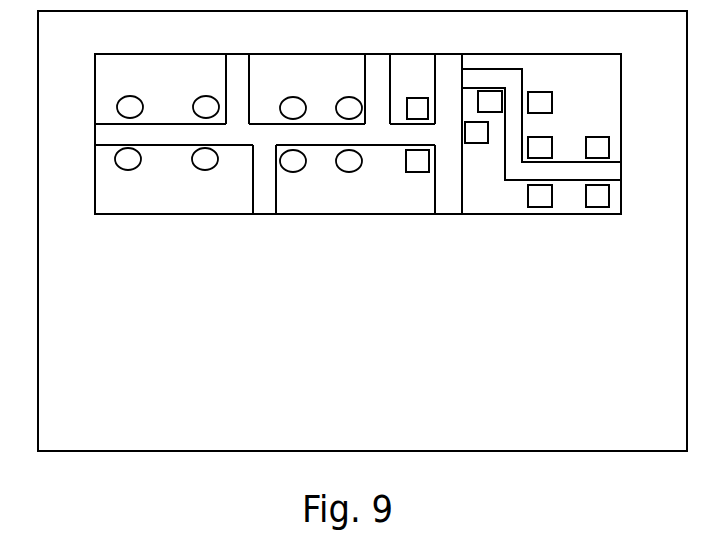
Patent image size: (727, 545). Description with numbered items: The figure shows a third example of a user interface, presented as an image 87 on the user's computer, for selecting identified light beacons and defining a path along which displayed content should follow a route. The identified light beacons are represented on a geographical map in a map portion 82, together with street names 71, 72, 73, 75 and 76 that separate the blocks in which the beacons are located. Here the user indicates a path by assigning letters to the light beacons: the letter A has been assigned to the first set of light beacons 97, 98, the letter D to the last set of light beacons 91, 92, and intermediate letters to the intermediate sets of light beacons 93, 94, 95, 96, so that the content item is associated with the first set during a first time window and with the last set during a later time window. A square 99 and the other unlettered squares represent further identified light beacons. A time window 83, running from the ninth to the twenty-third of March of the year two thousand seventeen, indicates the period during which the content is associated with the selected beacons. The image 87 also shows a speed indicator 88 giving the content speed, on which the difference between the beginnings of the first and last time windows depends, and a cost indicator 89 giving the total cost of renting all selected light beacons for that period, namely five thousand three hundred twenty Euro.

The street name 71 is at (265, 134).
The street name 72 is at (237, 89).
The street name 73 is at (264, 179).
The street name 75 is at (413, 134).
The street name 76 is at (541, 126).
The map portion 82 is at (547, 161).
The time window 83 is at (327, 242).
The image 87 is at (633, 451).
The speed indicator 88 is at (195, 283).
The cost indicator 89 is at (178, 327).
The light beacon 91 is at (118, 105).
The light beacon 92 is at (141, 162).
The light beacon 93 is at (193, 105).
The light beacon 94 is at (218, 162).
The light beacon 95 is at (280, 106).
The light beacon 96 is at (306, 164).
The light beacon 97 is at (336, 106).
The light beacon 98 is at (362, 164).
The storage location square 99 is at (406, 106).